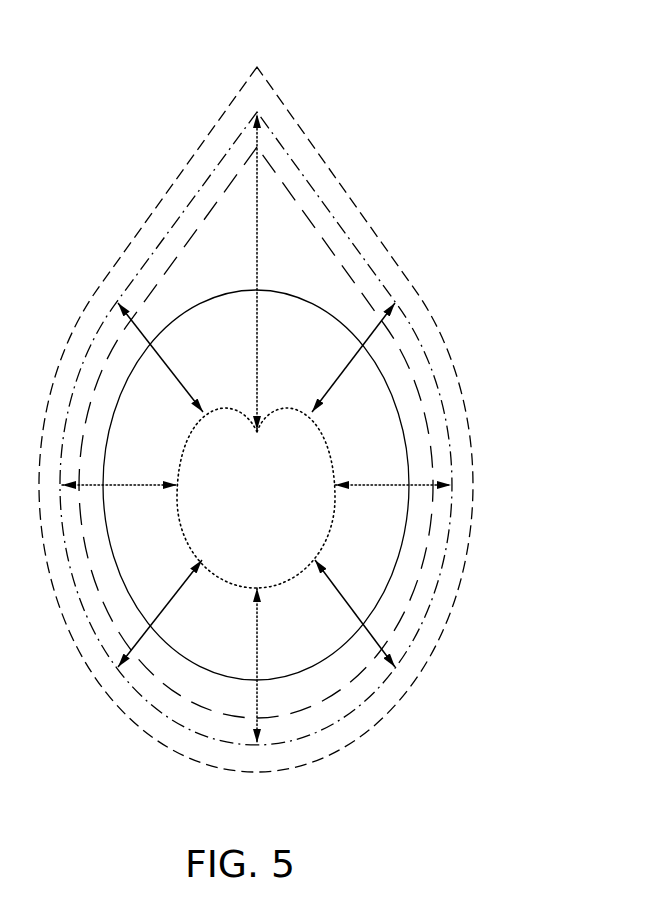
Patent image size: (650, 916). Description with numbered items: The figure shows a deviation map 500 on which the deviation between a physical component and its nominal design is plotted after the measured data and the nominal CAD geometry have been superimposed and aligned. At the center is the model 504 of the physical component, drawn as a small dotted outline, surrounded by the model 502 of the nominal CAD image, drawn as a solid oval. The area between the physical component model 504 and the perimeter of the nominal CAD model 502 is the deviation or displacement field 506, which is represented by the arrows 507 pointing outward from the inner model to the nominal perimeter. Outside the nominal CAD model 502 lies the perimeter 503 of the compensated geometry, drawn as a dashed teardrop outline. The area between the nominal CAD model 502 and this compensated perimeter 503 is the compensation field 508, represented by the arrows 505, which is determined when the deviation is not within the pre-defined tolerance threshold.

The deviation map 500 is at (210, 45).
The model of the nominal CAD image 502 is at (395, 390).
The perimeter of the compensated geometry 503 is at (357, 243).
The model of the physical component 504 is at (237, 527).
The arrows 505 is at (258, 243).
The deviation or displacement field 506 is at (120, 457).
The arrows 507 is at (172, 362).
The compensation field 508 is at (202, 276).